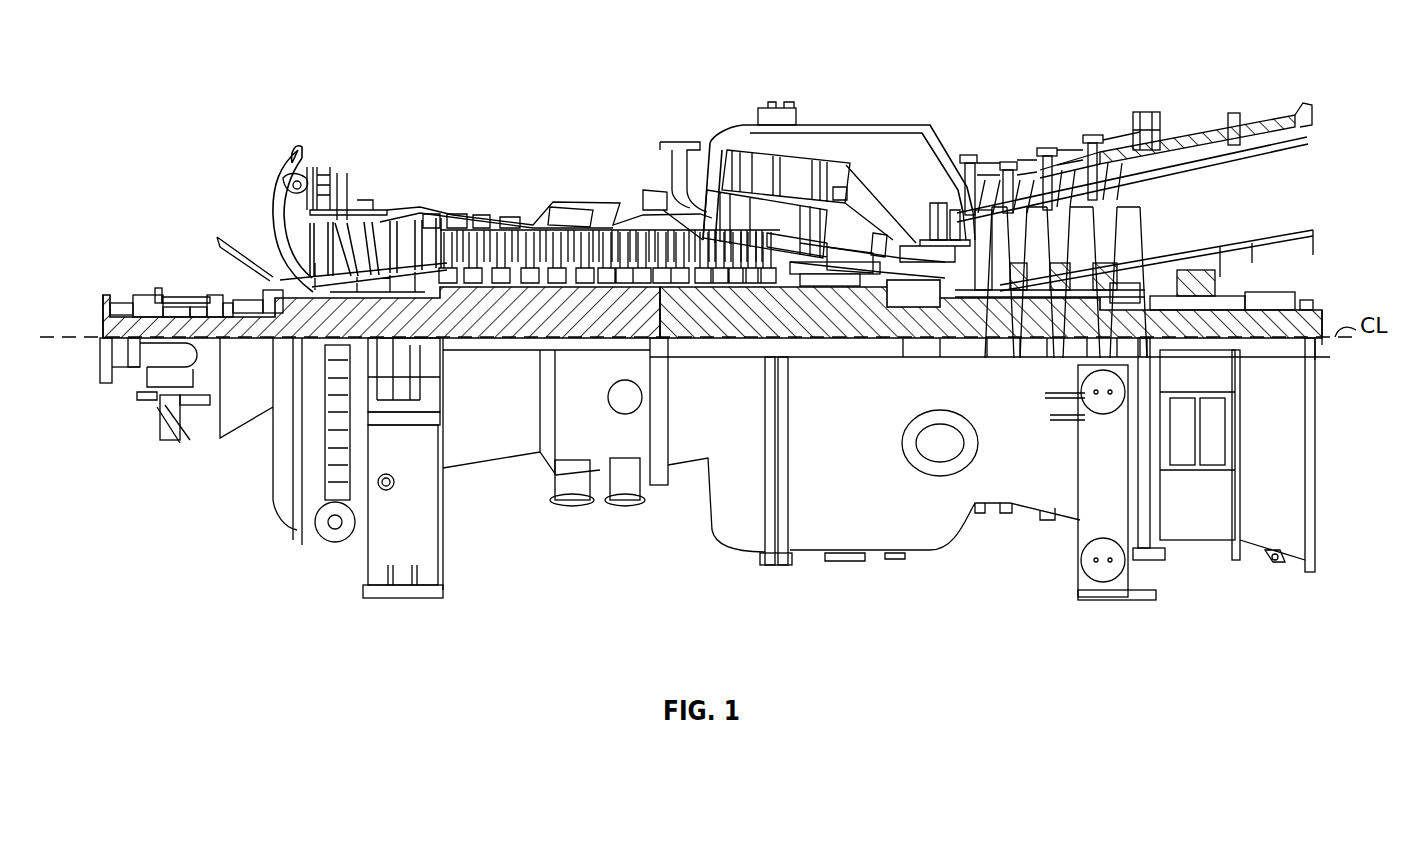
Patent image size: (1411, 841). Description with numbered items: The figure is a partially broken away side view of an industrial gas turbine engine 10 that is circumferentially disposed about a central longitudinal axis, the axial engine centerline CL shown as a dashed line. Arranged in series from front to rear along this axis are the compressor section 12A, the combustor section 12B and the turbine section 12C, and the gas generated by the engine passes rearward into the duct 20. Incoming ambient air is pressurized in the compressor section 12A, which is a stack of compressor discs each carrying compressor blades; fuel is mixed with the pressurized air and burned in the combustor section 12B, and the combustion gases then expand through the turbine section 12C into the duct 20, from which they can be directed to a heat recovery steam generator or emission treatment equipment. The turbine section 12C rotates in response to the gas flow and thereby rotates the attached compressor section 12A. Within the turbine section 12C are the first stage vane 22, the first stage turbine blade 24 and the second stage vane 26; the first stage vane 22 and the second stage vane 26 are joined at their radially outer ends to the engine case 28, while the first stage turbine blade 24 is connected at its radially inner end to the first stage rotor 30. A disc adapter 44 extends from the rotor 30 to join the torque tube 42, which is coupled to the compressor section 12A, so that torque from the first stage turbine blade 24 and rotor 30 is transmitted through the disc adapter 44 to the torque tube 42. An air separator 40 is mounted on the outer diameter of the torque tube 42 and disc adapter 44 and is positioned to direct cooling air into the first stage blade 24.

The gas turbine engine 10 is at (1084, 45).
The compressor section 12A is at (411, 205).
The combustor section 12B is at (740, 118).
The turbine section 12C is at (1006, 150).
The duct 20 is at (1250, 148).
The first stage vane 22 is at (942, 232).
The first stage turbine blade 24 is at (963, 185).
The second stage vane 26 is at (1017, 290).
The engine case 28 is at (1025, 162).
The first stage rotor 30 is at (953, 290).
The air separator 40 is at (920, 250).
The torque tube 42 is at (850, 258).
The disc adapter 44 is at (945, 288).